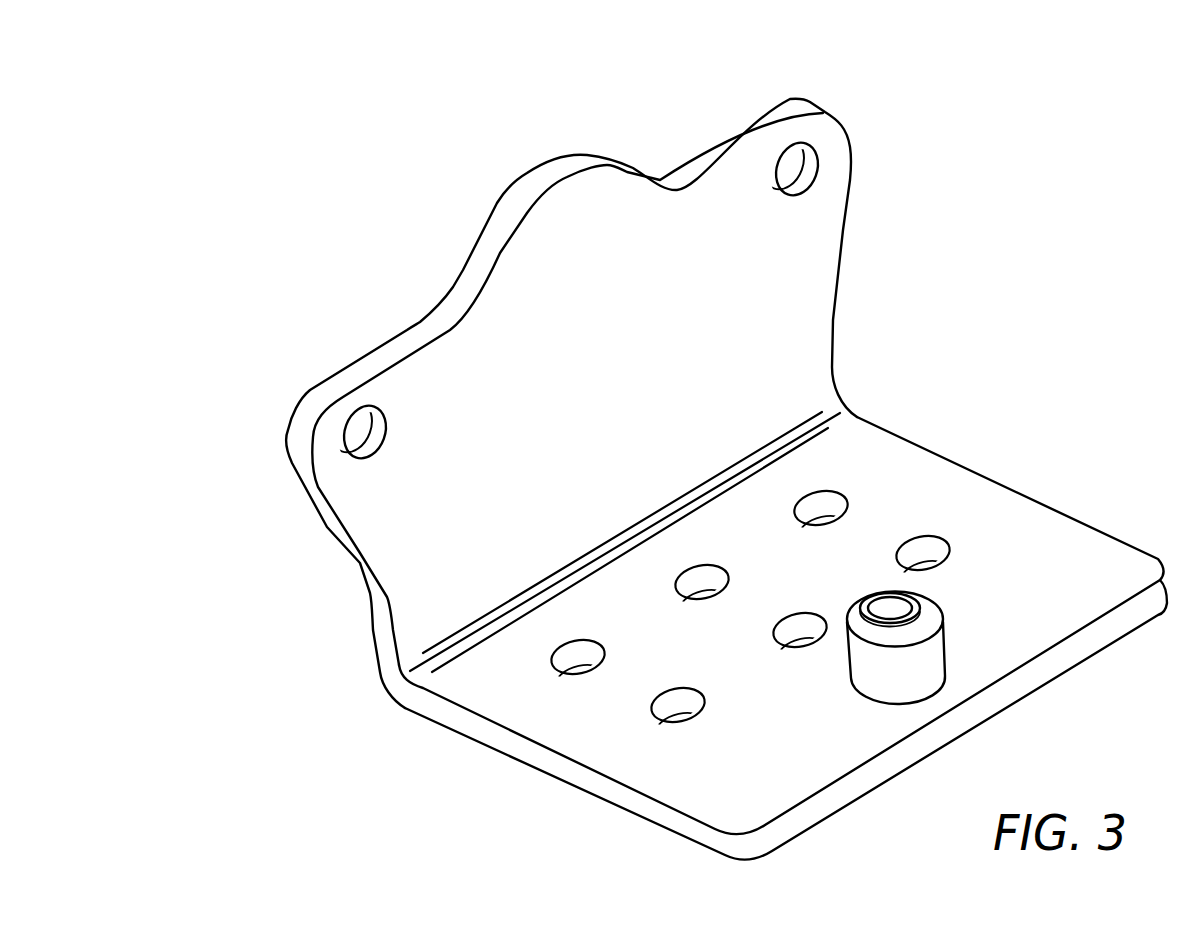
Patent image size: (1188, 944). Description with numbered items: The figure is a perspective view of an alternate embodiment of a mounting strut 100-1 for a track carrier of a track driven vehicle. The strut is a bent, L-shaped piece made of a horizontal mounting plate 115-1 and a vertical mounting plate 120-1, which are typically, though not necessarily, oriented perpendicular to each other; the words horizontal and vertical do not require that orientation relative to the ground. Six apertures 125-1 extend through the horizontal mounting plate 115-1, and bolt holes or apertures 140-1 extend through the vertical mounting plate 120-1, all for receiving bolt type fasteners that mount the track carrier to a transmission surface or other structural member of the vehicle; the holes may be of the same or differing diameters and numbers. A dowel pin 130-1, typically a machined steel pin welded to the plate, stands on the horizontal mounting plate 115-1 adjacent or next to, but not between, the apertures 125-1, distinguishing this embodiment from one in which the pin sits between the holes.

The mounting strut 100-1 is at (298, 211).
The horizontal mounting plate 115-1 is at (603, 750).
The vertical mounting plate 120-1 is at (388, 537).
The apertures 125-1 is at (850, 507).
The pin 130-1 is at (944, 642).
The apertures 140-1 is at (817, 163).